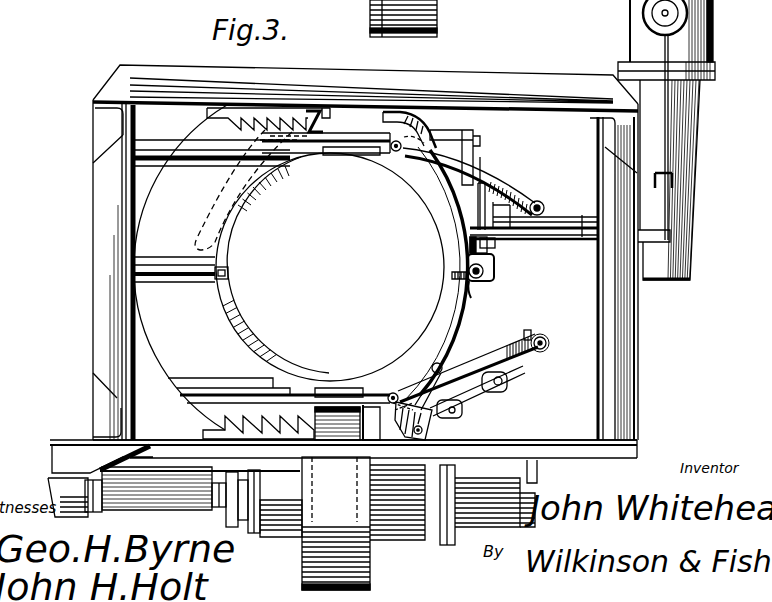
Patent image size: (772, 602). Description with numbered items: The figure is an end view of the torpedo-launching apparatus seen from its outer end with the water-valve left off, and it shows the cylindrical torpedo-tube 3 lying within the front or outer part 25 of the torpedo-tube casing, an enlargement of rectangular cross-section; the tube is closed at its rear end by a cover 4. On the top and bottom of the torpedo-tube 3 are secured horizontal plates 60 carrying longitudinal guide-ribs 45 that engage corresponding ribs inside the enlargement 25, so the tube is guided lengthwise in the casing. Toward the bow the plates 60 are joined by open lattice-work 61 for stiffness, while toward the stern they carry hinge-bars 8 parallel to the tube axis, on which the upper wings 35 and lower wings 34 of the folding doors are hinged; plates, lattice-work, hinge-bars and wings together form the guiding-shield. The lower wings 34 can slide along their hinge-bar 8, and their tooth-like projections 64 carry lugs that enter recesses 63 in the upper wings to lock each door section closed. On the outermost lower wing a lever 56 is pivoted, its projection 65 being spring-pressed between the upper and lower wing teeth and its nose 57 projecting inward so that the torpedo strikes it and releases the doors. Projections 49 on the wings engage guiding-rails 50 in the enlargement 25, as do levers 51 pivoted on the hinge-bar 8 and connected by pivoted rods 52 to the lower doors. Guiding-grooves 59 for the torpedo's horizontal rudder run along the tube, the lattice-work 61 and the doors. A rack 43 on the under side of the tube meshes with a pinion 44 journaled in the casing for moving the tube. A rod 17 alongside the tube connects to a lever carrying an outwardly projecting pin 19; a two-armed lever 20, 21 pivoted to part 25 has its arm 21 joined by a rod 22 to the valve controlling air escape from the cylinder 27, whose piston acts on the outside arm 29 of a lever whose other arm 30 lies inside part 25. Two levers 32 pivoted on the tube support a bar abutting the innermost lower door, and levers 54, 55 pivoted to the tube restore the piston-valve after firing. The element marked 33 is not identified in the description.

The torpedo-tube 3 is at (248, 198).
The cover 4 is at (448, 180).
The hinge-bars 8 is at (392, 393).
The rod 17 is at (464, 228).
The pin 19 is at (470, 250).
The arm 20 is at (495, 243).
The arm 21 is at (687, 203).
The rod 22 is at (668, 93).
The front or outer part of torpedo-tube casing 25 is at (343, 291).
The cylinder 27 is at (708, 26).
The outside arm 29 is at (574, 238).
The other arm 30 is at (512, 192).
The levers 32 is at (495, 178).
The pivot block 33 is at (493, 267).
The lower halves or wings 34 is at (510, 350).
The upper halves or wings 35 is at (474, 187).
The rack 43 is at (340, 422).
The pinion 44 is at (393, 572).
The guide-ribs 45 is at (250, 432).
The projections 49 is at (434, 418).
The guiding-rails 50 is at (395, 440).
The levers 51 is at (440, 385).
The pivoted rods 52 is at (446, 412).
The lever 54 is at (453, 133).
The lever 55 is at (278, 181).
The lever 56 is at (520, 370).
The nose 57 is at (529, 330).
The guiding-grooves 59 is at (453, 276).
The horizontal plates 60 is at (290, 403).
The open lattice-work 61 is at (208, 170).
The recess 63 is at (538, 203).
The tooth-like projections 64 is at (542, 340).
The projection 65 is at (536, 358).